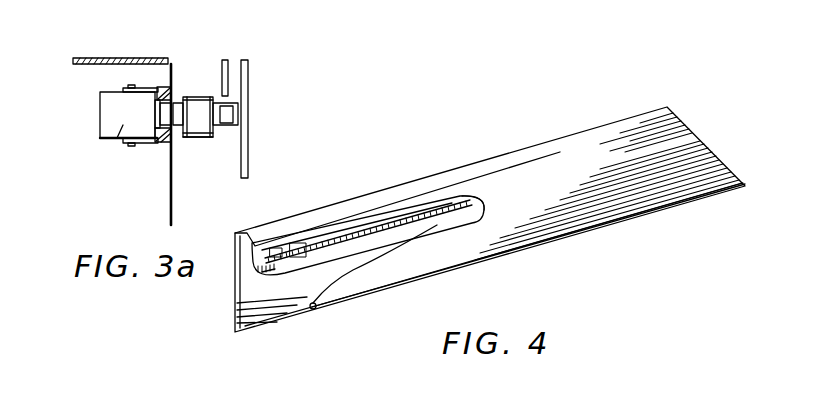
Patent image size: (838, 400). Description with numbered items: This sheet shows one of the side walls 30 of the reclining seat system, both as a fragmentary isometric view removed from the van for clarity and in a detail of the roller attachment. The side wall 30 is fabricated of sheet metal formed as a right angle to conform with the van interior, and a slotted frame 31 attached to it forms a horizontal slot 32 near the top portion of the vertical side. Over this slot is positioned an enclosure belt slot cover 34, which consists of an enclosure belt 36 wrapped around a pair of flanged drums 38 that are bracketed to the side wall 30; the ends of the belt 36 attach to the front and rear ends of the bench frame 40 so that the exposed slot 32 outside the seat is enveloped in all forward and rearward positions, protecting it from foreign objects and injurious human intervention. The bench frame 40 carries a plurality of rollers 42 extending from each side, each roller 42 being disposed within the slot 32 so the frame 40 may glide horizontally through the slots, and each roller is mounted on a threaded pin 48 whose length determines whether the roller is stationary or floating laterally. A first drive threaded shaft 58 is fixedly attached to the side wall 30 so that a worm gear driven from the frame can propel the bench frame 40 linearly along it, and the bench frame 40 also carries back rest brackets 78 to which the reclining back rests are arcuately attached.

In FIG. 3A, the side wall 30 is at (100, 58).
In FIG. 4, the side wall 30 is at (713, 150).
In FIG. 3A, the slotted frame 31 is at (173, 93).
In FIG. 3A, the horizontal slot 32 is at (162, 135).
In FIG. 4, the enclosure belt slot cover 34 is at (270, 283).
In FIG. 3A, the enclosure belt 36 is at (100, 110).
In FIG. 4, the enclosure belt 36 is at (437, 225).
In FIG. 3A, the flanged drum 38 is at (123, 125).
In FIG. 3A, the bench frame 40 is at (197, 136).
In FIG. 3A, the roller 42 is at (155, 103).
In FIG. 3A, the threaded pin 48 is at (237, 115).
In FIG. 4, the first drive threaded shaft 58 is at (476, 200).
In FIG. 3A, the back rest bracket 78 is at (250, 70).